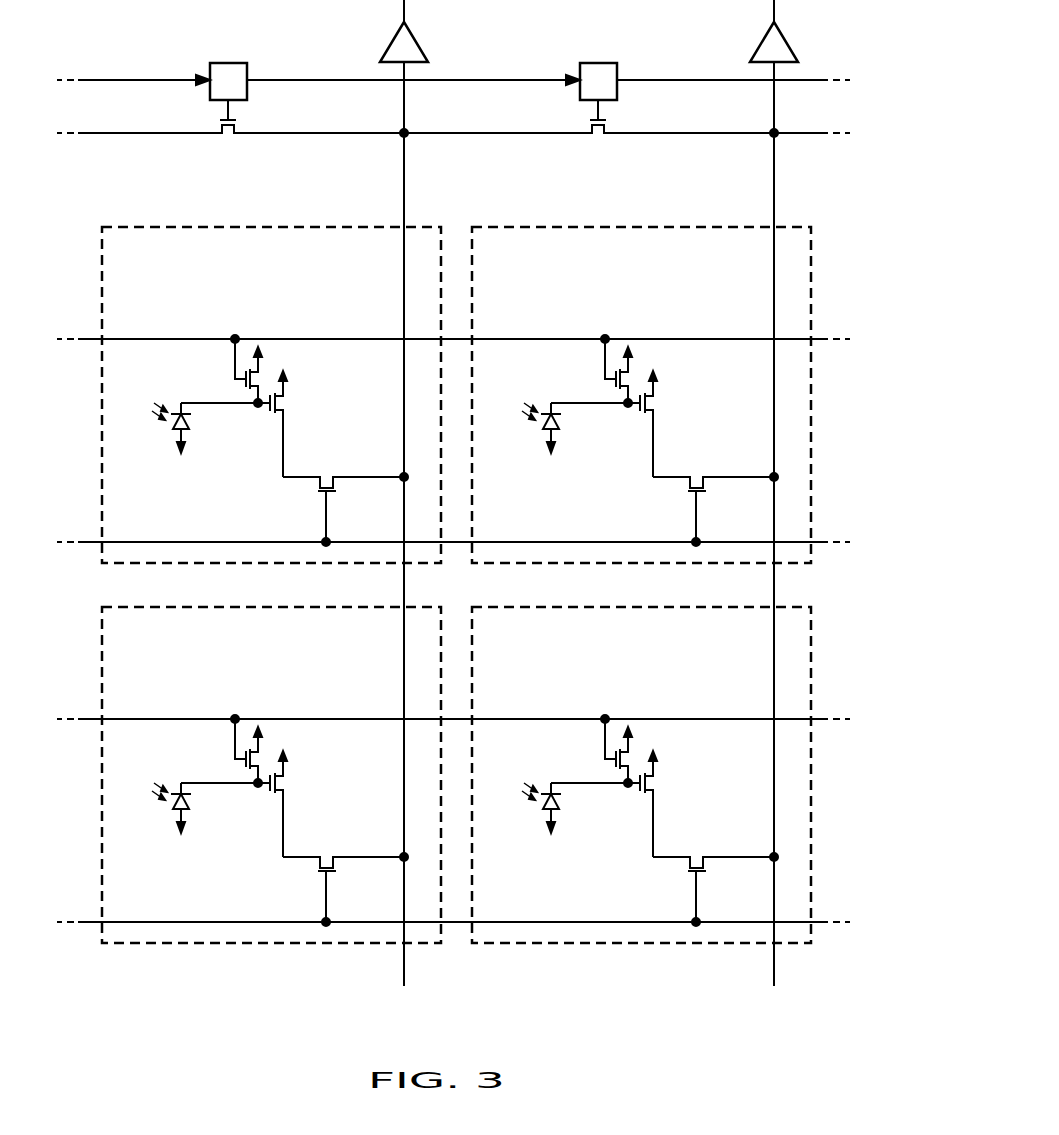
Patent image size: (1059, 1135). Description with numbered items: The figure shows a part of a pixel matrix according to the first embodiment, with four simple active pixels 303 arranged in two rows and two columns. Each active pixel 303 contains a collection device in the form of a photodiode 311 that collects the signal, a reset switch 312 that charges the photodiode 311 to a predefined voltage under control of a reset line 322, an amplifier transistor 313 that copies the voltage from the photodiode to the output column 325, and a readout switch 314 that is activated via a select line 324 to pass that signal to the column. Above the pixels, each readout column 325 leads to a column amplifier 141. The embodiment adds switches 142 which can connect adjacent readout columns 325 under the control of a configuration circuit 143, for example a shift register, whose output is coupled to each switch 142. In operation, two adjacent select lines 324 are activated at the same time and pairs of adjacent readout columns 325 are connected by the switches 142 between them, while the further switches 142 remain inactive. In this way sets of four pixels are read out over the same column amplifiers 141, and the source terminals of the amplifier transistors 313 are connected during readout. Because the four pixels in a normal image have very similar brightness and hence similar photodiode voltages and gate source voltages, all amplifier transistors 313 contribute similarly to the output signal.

The column amplifier 141 is at (418, 43).
The switch 142 is at (228, 136).
The configuration circuit 143 is at (228, 62).
The active pixel 303 is at (102, 254).
The photodiode 311 is at (192, 422).
The reset switch 312 is at (262, 376).
The amplifier transistor 313 is at (287, 400).
The readout switch 314 is at (324, 476).
The reset line 322 is at (155, 338).
The select line 324 is at (155, 540).
The output column 325 is at (404, 263).